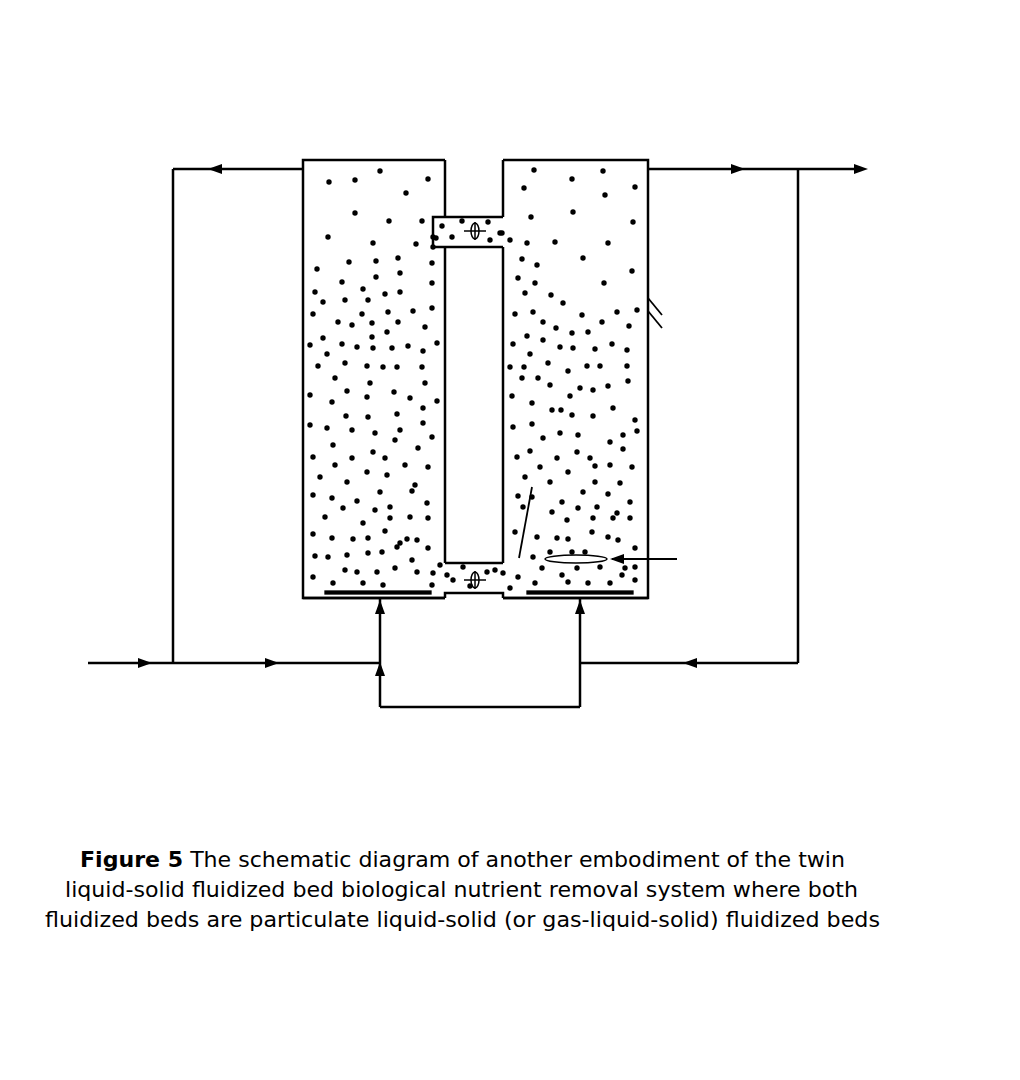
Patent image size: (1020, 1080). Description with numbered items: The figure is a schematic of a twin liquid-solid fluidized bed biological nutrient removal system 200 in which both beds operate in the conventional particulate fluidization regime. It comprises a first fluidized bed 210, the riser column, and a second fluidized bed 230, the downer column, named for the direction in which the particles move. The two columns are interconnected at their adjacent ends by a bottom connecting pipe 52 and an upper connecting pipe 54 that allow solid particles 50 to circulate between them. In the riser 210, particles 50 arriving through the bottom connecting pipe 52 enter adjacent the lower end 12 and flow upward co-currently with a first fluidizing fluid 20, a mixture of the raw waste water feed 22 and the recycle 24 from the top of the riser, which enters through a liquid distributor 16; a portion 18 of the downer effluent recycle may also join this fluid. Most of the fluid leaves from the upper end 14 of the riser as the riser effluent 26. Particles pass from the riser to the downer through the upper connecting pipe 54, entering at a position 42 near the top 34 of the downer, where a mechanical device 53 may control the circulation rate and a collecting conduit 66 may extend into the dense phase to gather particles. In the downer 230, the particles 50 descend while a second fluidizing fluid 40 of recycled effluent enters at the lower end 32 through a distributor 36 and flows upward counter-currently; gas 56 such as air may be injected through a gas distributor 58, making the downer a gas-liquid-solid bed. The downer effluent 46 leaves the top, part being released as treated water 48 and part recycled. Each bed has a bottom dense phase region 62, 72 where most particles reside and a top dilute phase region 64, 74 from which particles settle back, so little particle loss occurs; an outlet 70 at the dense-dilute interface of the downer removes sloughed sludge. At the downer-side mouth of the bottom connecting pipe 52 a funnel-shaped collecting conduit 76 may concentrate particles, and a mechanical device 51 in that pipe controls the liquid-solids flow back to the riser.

The liquid-solid fluidized bed biological nutrient removal system 200 is at (120, 86).
The lower end of the first fluidized bed 12 is at (407, 573).
The first column 14 is at (400, 167).
The liquid distributor 16 is at (380, 592).
The portion of the downer effluent recycle 18 is at (447, 712).
The first fluidizing fluid 20 is at (373, 631).
The raw waste water feed 22 is at (110, 660).
The recycle from the top of the first fluidized bed 24 is at (163, 326).
The riser effluent 26 is at (220, 157).
The lower end of the second fluidized bed 32 is at (552, 585).
The top of the second fluidized bed 34 is at (522, 168).
The second distributor plate 36 is at (620, 587).
The second fluidizing fluid 40 is at (592, 630).
The position near the top of the downer 42 is at (510, 228).
The downer effluent 46 is at (745, 158).
The treated water 48 is at (832, 158).
The solid particles 50 is at (330, 182).
The mechanical device 51 is at (476, 590).
The bottom connecting pipe 52 is at (485, 548).
The mechanical device 53 is at (472, 220).
The upper connecting pipe 54 is at (463, 253).
The gas 56 is at (663, 553).
The gas distributor 58 is at (587, 553).
The bottom dense phase region of the first fluidized bed 62 is at (382, 462).
The top dilute phase region of the first fluidized bed 64 is at (374, 243).
The collecting conduit 66 is at (423, 265).
The outlet 70 is at (667, 315).
The bottom dense phase region of the second fluidized bed 72 is at (572, 415).
The top dilute phase region of the second fluidized bed 74 is at (572, 245).
The collecting conduit 76 is at (525, 525).
The first fluidized bed 210 is at (367, 397).
The second fluidized bed 230 is at (580, 380).